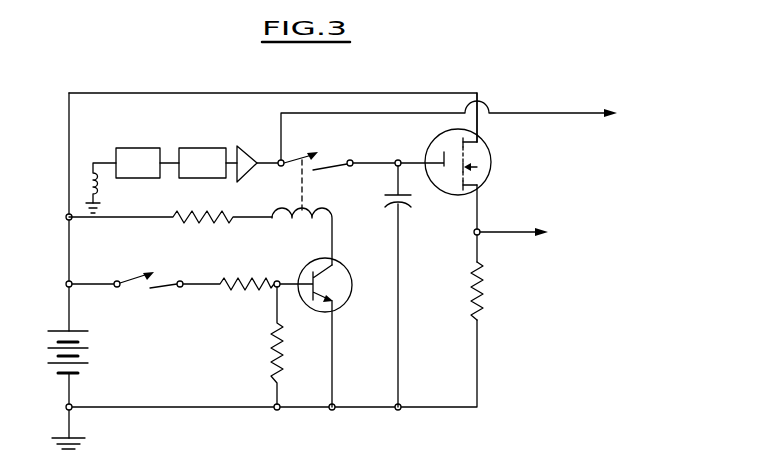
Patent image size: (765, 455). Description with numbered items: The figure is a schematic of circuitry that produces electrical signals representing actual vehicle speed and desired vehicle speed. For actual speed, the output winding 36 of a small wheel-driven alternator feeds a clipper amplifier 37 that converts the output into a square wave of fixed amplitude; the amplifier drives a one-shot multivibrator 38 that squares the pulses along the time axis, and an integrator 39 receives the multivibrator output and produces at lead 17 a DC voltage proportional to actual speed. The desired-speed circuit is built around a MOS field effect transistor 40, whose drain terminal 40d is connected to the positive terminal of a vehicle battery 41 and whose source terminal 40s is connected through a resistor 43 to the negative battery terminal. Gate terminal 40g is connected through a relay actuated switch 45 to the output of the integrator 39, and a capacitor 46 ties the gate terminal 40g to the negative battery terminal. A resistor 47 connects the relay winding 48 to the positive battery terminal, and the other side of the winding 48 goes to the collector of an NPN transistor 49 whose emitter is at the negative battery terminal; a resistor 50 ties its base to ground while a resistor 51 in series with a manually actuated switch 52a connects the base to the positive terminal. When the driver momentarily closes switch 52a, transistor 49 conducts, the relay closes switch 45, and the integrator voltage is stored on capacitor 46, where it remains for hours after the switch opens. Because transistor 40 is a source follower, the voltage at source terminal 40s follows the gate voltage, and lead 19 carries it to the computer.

The lead 17 is at (560, 114).
The lead 19 is at (520, 227).
The output winding 36 is at (98, 183).
The clipper amplifier 37 is at (147, 163).
The one-shot multivibrator 38 is at (208, 163).
The integrator 39 is at (255, 141).
The field effect transistor 40 is at (492, 163).
The drain terminal 40d is at (478, 122).
The gate terminal 40g is at (395, 161).
The source terminal 40s is at (480, 230).
The vehicle battery 41 is at (83, 355).
The resistor 43 is at (487, 282).
The relay actuated switch 45 is at (307, 153).
The capacitor 46 is at (417, 200).
The resistor 47 is at (203, 228).
The winding 48 is at (297, 223).
The transistor 49 is at (348, 268).
The resistor 50 is at (268, 334).
The resistor 51 is at (232, 292).
The manually actuated switch 52a is at (155, 291).